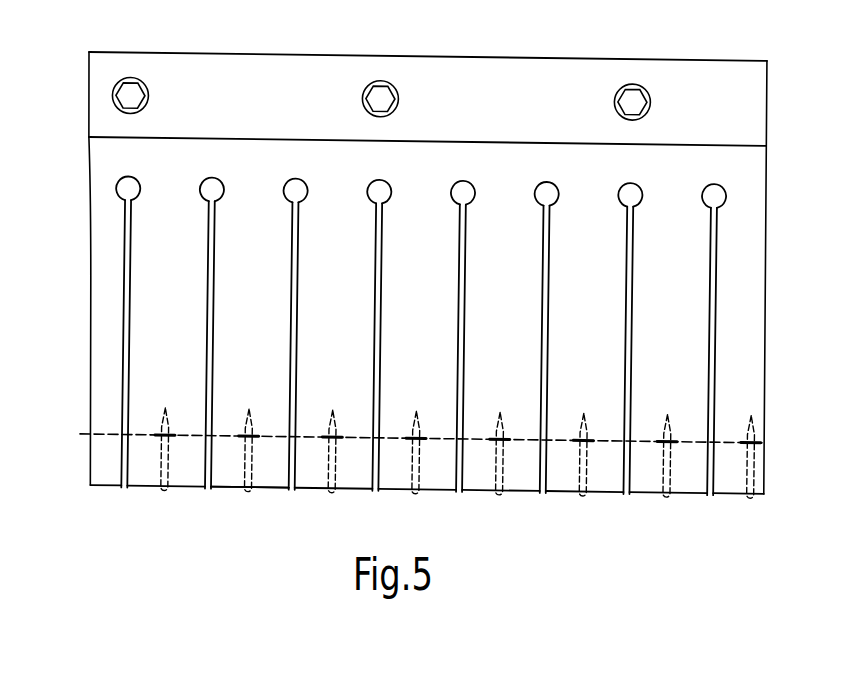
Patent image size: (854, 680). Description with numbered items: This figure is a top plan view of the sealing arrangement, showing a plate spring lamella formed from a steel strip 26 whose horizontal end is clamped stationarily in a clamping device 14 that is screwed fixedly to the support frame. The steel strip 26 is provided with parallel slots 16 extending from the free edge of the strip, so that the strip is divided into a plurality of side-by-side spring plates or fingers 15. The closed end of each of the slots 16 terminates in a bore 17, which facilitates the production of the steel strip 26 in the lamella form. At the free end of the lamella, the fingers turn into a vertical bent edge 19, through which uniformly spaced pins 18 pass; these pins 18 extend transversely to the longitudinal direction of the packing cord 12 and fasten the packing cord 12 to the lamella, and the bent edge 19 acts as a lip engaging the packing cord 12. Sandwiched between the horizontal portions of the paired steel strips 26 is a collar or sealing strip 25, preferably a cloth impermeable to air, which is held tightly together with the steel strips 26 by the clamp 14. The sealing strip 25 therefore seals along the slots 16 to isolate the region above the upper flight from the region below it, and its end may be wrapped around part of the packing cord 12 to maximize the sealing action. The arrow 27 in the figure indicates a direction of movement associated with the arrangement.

The packing cord 12 is at (86, 449).
The clamping device 14 is at (246, 92).
The spring plates or fingers 15 is at (182, 302).
The slots 16 is at (376, 357).
The bores 17 is at (293, 192).
The pins 18 is at (500, 470).
The bent edge 19 is at (223, 488).
The sealing strip 25 is at (374, 393).
The steel strip 26 is at (510, 187).
The direction of movement 27 is at (199, 530).